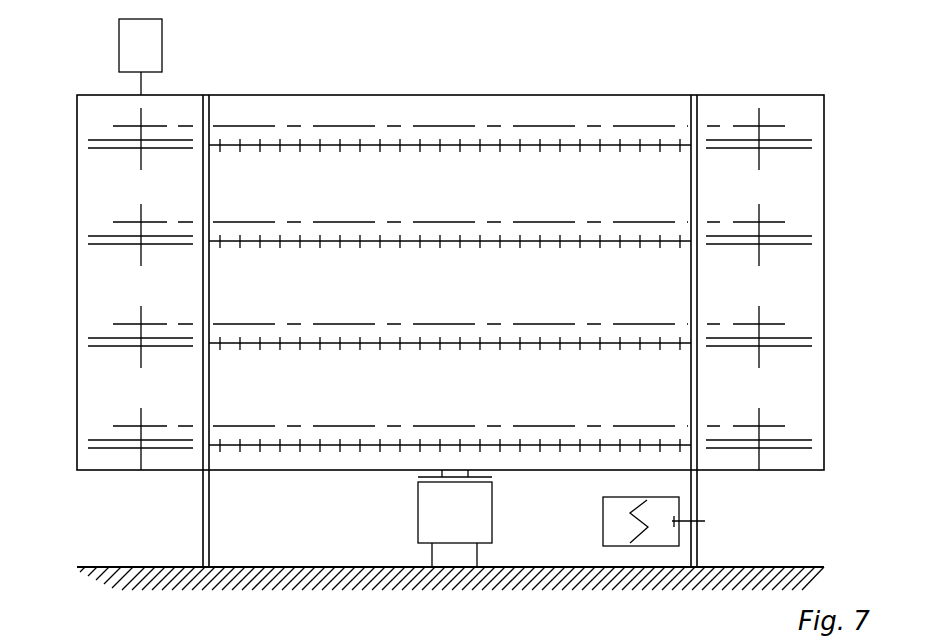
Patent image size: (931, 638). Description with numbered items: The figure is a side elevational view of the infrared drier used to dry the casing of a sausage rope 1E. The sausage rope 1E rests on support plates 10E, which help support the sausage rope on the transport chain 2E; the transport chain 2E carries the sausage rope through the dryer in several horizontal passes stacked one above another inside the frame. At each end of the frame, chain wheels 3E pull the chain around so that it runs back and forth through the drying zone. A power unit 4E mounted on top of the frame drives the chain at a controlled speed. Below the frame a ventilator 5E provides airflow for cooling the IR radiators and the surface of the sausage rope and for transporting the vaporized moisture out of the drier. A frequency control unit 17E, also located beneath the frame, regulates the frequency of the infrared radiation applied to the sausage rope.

The sausage rope 1E is at (238, 126).
The transport chain 2E is at (267, 143).
The support plate 10E is at (360, 144).
The chain wheel 3E is at (106, 141).
The power unit 4E is at (152, 45).
The ventilator 5E is at (427, 508).
The frequency control unit 17E is at (607, 512).